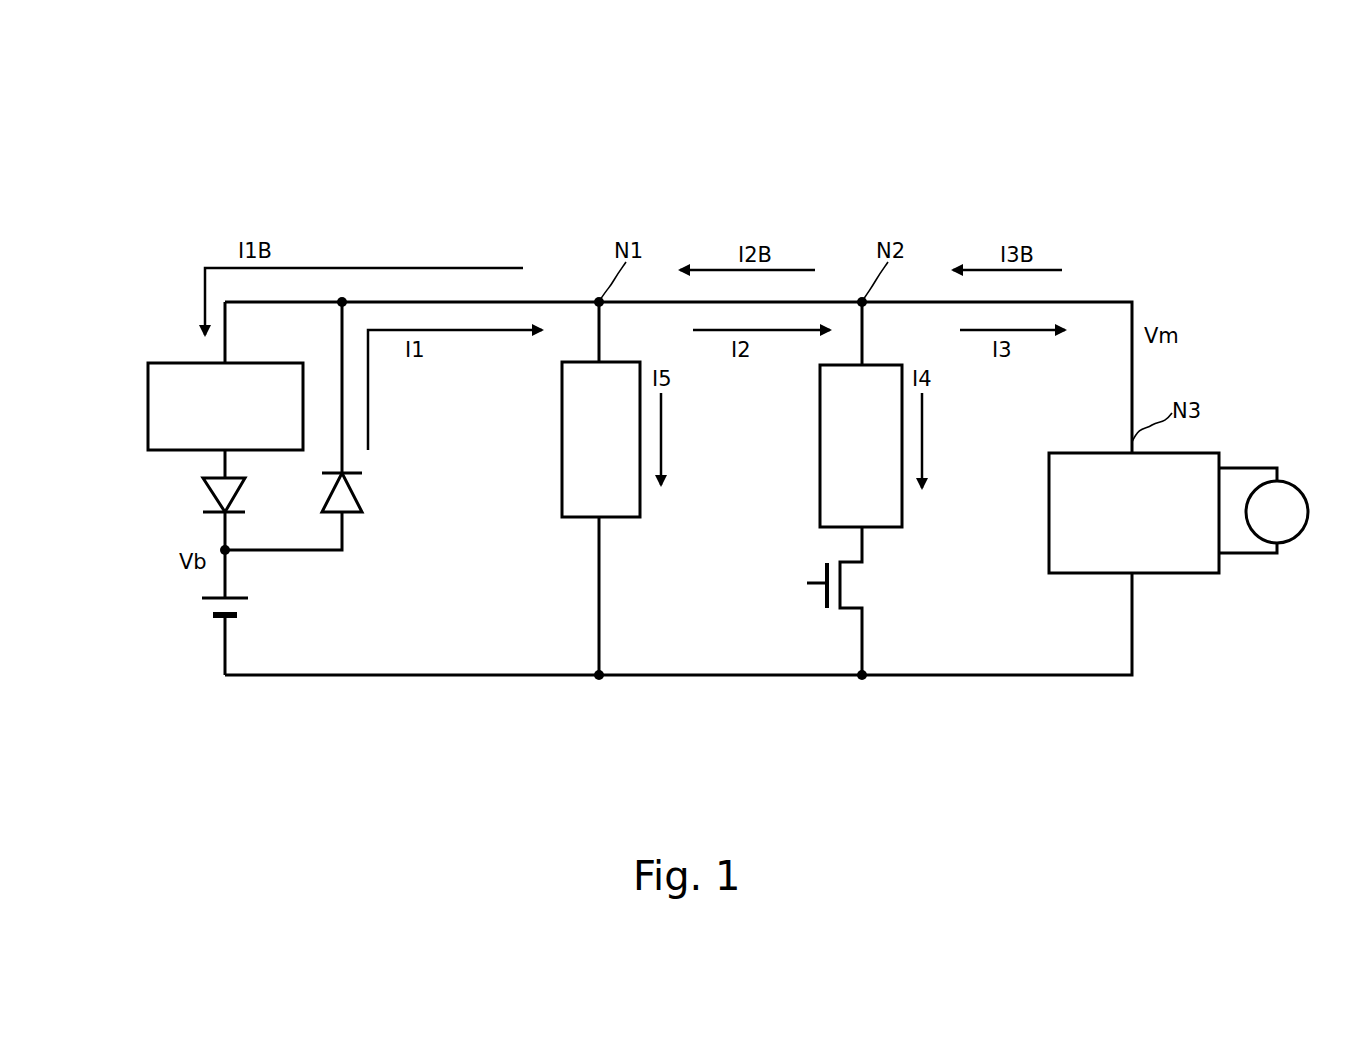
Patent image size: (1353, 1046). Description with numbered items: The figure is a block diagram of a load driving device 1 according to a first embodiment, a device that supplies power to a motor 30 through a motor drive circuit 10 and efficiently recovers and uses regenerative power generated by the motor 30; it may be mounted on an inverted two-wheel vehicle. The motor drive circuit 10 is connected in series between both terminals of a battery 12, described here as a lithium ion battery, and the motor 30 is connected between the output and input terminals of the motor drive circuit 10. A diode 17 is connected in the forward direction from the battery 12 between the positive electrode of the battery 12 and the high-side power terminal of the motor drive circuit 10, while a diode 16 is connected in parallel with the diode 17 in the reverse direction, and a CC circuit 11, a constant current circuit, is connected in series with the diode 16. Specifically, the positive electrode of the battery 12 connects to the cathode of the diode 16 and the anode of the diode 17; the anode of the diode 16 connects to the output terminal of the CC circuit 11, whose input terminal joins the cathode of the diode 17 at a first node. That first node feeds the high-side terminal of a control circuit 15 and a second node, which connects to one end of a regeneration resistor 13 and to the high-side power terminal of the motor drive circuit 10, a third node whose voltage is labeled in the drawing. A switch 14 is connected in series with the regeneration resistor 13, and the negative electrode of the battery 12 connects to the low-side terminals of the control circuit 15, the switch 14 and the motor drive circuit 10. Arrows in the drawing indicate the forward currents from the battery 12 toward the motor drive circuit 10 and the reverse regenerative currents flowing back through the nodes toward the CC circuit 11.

The load driving device 1 is at (578, 167).
The motor drive circuit 10 is at (1049, 523).
The CC circuit 11 is at (148, 394).
The battery 12 is at (213, 618).
The regeneration resistor 13 is at (820, 443).
The switch 14 is at (818, 599).
The control circuit 15 is at (622, 518).
The diode 16 is at (203, 490).
The diode 17 is at (350, 514).
The motor 30 is at (1295, 540).